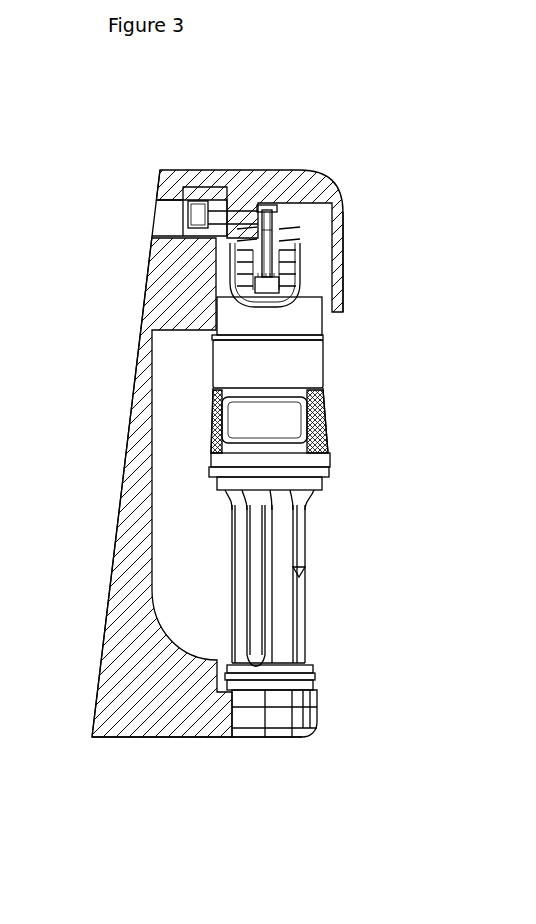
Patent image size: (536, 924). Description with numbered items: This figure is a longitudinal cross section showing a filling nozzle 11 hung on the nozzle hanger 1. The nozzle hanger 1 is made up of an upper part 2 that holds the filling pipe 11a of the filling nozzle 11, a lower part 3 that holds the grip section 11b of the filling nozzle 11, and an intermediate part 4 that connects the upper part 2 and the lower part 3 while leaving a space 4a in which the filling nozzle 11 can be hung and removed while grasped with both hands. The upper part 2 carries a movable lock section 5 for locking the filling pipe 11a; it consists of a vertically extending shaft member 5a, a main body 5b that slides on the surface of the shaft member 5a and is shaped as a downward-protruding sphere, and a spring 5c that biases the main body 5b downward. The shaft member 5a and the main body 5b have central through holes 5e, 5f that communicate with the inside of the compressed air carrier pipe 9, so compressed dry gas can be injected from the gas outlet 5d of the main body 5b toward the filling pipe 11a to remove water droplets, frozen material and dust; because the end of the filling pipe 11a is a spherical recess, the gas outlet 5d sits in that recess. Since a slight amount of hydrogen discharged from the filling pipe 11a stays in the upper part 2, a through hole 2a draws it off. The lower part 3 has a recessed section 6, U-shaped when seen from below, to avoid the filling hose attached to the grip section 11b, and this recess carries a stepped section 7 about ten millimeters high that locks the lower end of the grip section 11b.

The nozzle hanger 1 is at (268, 462).
The upper part 2 is at (250, 172).
The through hole 2a is at (345, 210).
The lower part 3 is at (175, 738).
The intermediate part 4 is at (128, 437).
The space 4a is at (178, 483).
The movable lock section 5 is at (241, 229).
The shaft member 5a is at (322, 210).
The main body 5b is at (301, 275).
The spring 5c is at (283, 228).
The gas outlet 5d is at (255, 312).
The through hole 5e is at (273, 235).
The through hole 5f is at (280, 288).
The recessed section 6 is at (318, 712).
The stepped section 7 is at (276, 692).
The compressed air carrier pipe 9 is at (197, 200).
The filling nozzle 11 is at (324, 497).
The filling pipe 11a is at (325, 320).
The grip section 11b is at (306, 640).